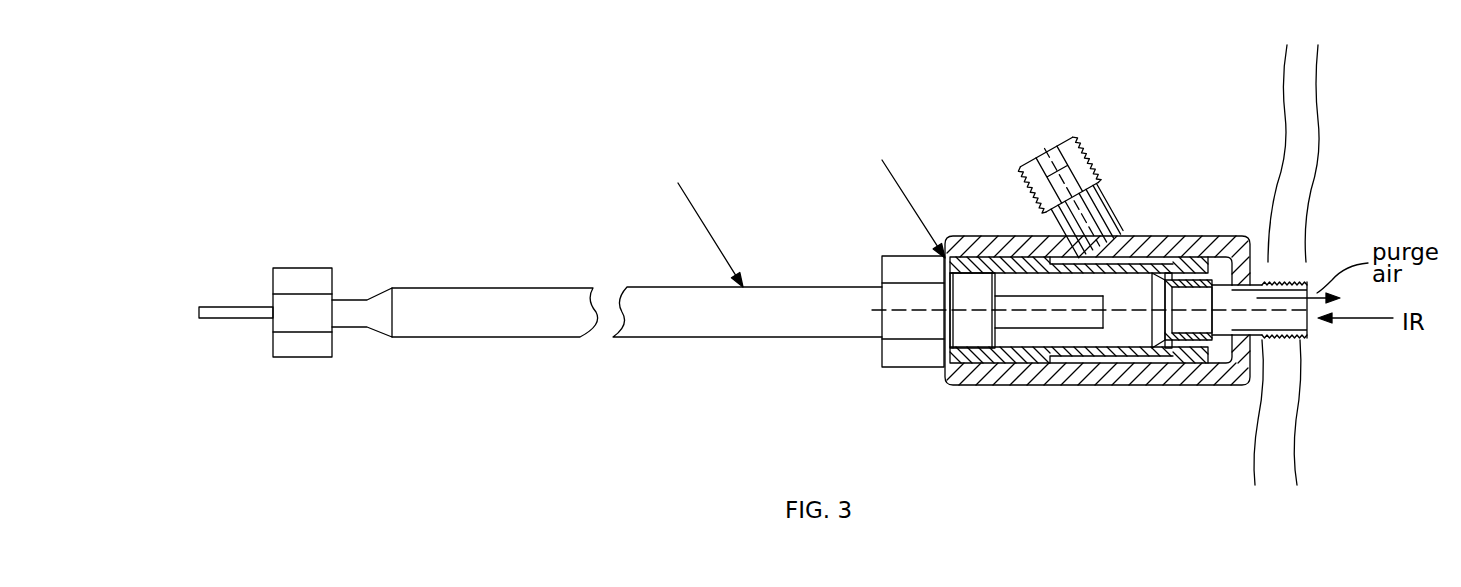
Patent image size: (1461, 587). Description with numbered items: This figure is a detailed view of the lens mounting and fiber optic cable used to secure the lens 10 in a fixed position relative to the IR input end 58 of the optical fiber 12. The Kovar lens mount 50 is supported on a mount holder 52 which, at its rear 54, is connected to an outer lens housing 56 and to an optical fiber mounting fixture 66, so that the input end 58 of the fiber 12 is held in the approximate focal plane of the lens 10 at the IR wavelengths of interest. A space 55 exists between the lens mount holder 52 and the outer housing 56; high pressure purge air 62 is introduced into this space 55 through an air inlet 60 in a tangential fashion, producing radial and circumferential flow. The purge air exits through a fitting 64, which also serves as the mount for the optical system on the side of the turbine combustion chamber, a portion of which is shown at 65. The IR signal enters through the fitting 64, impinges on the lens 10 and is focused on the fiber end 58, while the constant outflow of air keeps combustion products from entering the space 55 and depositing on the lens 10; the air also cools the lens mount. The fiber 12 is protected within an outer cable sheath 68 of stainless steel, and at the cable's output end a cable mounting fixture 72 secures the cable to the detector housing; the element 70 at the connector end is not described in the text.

The lens 10 is at (1264, 352).
The optical fiber 12 is at (1037, 317).
The Kovar lens mount 50 is at (1210, 270).
The mount holder 52 is at (1080, 352).
The rear of mount holder 54 is at (985, 260).
The space 55 is at (1204, 368).
The outer lens housing 56 is at (1200, 222).
The input end of the optical fiber 58 is at (1110, 300).
The air inlet 60 is at (1107, 200).
The purge air 62 is at (1034, 116).
The fitting 64 is at (1283, 282).
The turbine combustion chamber portion 65 is at (1294, 430).
The optical fiber mounting fixture 66 is at (882, 366).
The outer cable sheath 68 is at (517, 337).
The connector pin 70 is at (199, 318).
The cable mounting fixture 72 is at (310, 268).